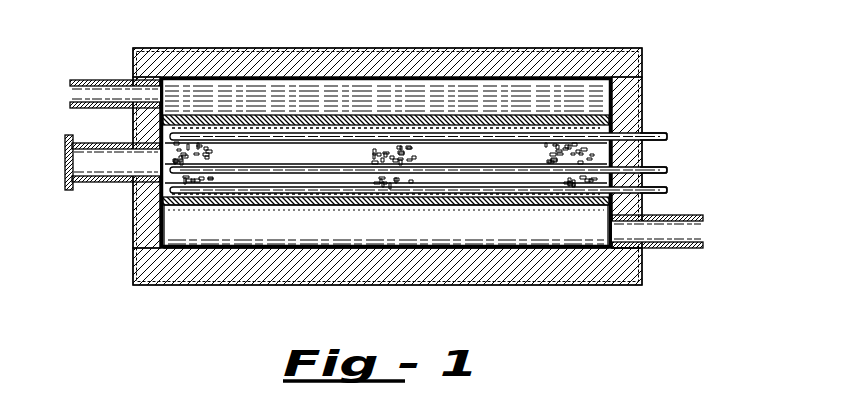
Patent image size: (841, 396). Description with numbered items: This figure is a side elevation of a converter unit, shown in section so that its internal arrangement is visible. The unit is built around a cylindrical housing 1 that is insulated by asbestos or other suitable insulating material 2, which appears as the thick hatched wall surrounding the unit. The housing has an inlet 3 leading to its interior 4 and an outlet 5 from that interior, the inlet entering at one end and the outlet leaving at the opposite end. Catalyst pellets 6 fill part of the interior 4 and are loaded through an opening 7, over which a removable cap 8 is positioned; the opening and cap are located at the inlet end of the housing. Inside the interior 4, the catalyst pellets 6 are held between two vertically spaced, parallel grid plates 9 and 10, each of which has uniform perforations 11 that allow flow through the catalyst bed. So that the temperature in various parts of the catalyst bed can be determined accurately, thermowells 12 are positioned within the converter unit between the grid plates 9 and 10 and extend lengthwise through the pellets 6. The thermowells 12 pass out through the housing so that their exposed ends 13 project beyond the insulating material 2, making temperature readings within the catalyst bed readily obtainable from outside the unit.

The cylindrical housing 1 is at (190, 48).
The insulating material 2 is at (262, 62).
The inlet 3 is at (68, 90).
The interior 4 is at (228, 77).
The outlet 5 is at (705, 229).
The catalyst pellets 6 is at (218, 130).
The opening 7 is at (121, 172).
The removable cap 8 is at (65, 167).
The grid plate 9 is at (302, 125).
The grid plate 10 is at (283, 206).
The perforations 11 is at (357, 205).
The thermowells 12 is at (323, 190).
The exposed ends 13 is at (667, 190).